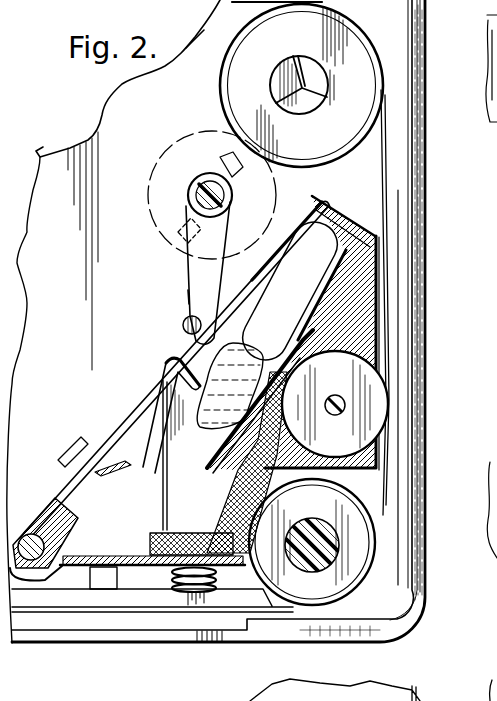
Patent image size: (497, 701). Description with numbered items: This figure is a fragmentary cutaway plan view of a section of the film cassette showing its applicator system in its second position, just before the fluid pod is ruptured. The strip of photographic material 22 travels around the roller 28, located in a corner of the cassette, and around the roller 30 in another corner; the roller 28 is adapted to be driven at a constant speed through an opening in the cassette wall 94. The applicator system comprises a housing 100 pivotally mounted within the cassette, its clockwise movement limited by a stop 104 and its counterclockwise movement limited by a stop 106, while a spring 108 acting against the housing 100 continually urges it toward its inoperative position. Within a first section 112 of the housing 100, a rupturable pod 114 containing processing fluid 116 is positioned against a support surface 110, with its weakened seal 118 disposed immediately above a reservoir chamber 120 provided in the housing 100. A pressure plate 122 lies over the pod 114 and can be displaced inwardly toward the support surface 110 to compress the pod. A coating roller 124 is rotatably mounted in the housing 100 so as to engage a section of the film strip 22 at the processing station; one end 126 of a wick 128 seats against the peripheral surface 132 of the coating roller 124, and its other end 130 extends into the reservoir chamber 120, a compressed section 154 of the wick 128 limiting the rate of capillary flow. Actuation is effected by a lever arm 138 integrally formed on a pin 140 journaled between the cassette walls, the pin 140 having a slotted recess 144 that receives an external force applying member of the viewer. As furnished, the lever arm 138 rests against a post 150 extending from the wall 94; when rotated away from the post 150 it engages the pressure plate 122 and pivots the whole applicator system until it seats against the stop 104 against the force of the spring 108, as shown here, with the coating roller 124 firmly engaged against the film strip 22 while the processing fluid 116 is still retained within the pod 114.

The strip of photographic material 22 is at (227, 0).
The roller 28 is at (357, 75).
The roller 30 is at (338, 582).
The cassette wall 94 is at (186, 56).
The housing 100 is at (375, 247).
The stop 104 is at (100, 580).
The stop 106 is at (72, 445).
The spring 108 is at (182, 592).
The support surface 110 is at (325, 240).
The first section of the housing 112 is at (143, 442).
The rupturable pod 114 is at (325, 208).
The processing fluid 116 is at (218, 372).
The weakened seal 118 is at (163, 486).
The reservoir chamber 120 is at (72, 525).
The pressure plate 122 is at (273, 254).
The coating roller 124 is at (325, 367).
The end of the wick 126 is at (273, 371).
The wick 128 is at (152, 545).
The other end of the wick 130 is at (152, 535).
The peripheral surface of the coating roller 132 is at (378, 372).
The lever arm 138 is at (190, 297).
The pin 140 is at (192, 184).
The slotted recess 144 is at (203, 134).
The post 150 is at (193, 316).
The compressed section of the wick 154 is at (282, 488).